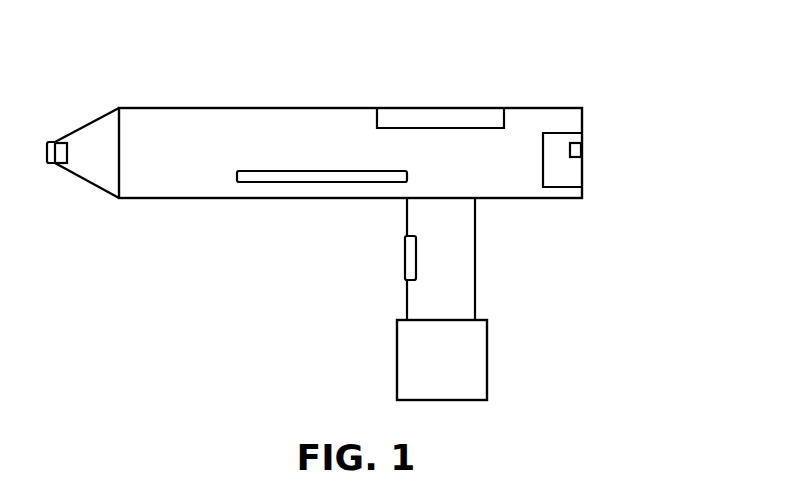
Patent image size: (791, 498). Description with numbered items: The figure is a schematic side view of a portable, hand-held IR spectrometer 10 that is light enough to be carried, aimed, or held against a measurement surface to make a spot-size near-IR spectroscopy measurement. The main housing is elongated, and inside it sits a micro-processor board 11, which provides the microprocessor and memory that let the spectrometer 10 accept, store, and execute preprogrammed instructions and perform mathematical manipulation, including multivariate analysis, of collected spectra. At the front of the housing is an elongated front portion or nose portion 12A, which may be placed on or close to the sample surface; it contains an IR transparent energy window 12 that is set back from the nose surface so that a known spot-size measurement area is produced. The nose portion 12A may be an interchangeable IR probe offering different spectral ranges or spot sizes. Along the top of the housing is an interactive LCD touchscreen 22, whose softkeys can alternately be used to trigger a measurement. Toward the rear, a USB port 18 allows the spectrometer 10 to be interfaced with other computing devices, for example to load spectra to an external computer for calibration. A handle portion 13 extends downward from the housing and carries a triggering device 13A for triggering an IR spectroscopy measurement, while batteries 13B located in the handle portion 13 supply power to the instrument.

The portable IR spectrometer 10 is at (308, 86).
The micro-processor board 11 is at (276, 173).
The IR transparent energy window 12 is at (67, 153).
The elongated front portion 12A is at (86, 127).
The handle portion 13 is at (457, 262).
The triggering device 13A is at (410, 258).
The batteries 13B is at (468, 360).
The USB port 18 is at (582, 147).
The interactive LCD touchscreen 22 is at (443, 108).